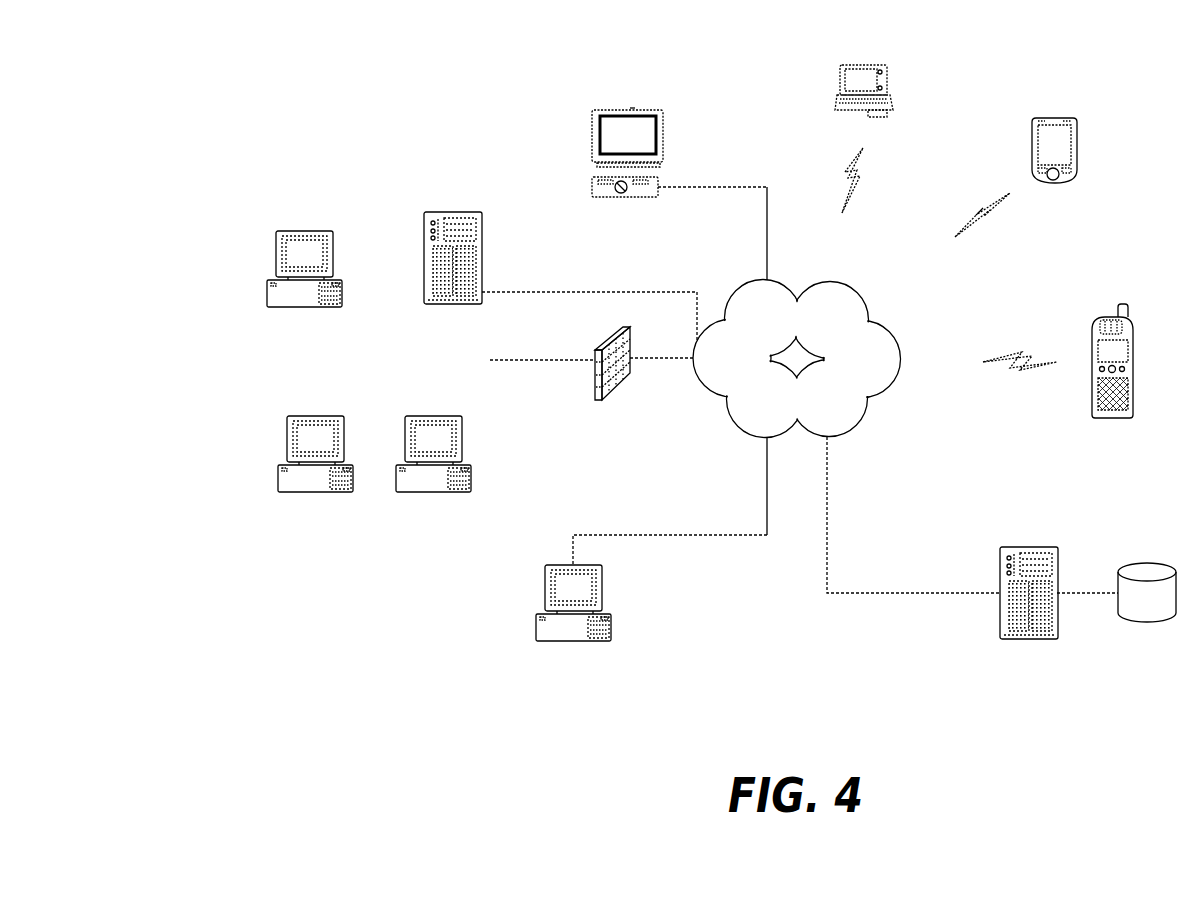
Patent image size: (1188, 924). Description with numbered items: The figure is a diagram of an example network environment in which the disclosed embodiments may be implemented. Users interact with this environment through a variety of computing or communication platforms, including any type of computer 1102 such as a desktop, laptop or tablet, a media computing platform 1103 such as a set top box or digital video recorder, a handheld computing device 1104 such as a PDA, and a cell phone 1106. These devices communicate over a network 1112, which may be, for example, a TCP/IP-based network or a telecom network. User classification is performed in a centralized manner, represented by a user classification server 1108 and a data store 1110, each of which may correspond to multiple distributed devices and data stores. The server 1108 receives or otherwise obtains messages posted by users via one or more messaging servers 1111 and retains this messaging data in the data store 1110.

The computer 1102 is at (277, 252).
The media computing platform 1103 is at (590, 180).
The handheld computing device 1104 is at (1035, 120).
The cell phone 1106 is at (1097, 320).
The user classification server 1108 is at (1000, 547).
The data store 1110 is at (1145, 563).
The messaging server 1111 is at (446, 212).
The network 1112 is at (735, 297).